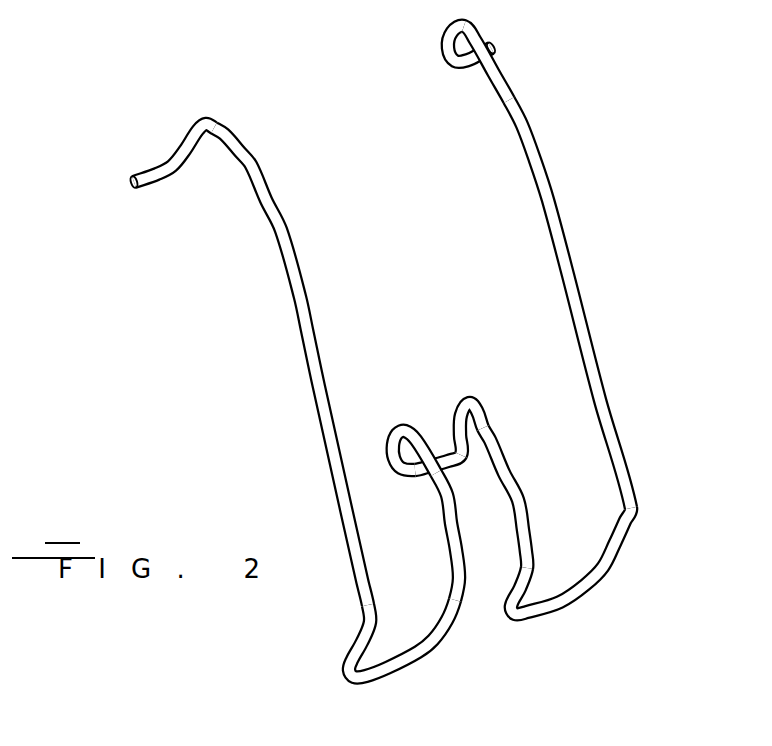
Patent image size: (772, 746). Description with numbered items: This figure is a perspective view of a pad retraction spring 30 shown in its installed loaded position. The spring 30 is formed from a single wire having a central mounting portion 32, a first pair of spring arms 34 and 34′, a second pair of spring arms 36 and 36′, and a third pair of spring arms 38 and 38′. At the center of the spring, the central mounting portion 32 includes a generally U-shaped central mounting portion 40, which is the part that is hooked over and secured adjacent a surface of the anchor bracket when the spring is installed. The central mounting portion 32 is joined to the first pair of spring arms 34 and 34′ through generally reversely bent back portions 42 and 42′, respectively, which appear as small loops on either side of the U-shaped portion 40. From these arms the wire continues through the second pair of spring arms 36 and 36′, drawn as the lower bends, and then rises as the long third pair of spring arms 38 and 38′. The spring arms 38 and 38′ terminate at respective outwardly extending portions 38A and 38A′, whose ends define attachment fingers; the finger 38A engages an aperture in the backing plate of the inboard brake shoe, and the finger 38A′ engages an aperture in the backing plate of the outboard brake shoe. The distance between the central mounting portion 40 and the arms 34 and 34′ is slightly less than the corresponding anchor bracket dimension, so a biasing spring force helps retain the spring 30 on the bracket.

The pad retraction spring 30 is at (670, 480).
The central mounting portion 32 is at (441, 430).
The first spring arm of first pair 34 is at (430, 524).
The second spring arm of first pair 34′ is at (523, 460).
The first spring arm of second pair 36 is at (389, 684).
The second spring arm of second pair 36′ is at (568, 620).
The first spring arm of third pair 38 is at (302, 389).
The second spring arm of third pair 38′ is at (583, 287).
The outwardly extending portion 38A is at (151, 184).
The outwardly extending portion 38A′ is at (494, 38).
The U-shaped central mounting portion 40 is at (464, 467).
The reversely bent back portion 42 is at (403, 425).
The reversely bent back portion 42′ is at (468, 402).